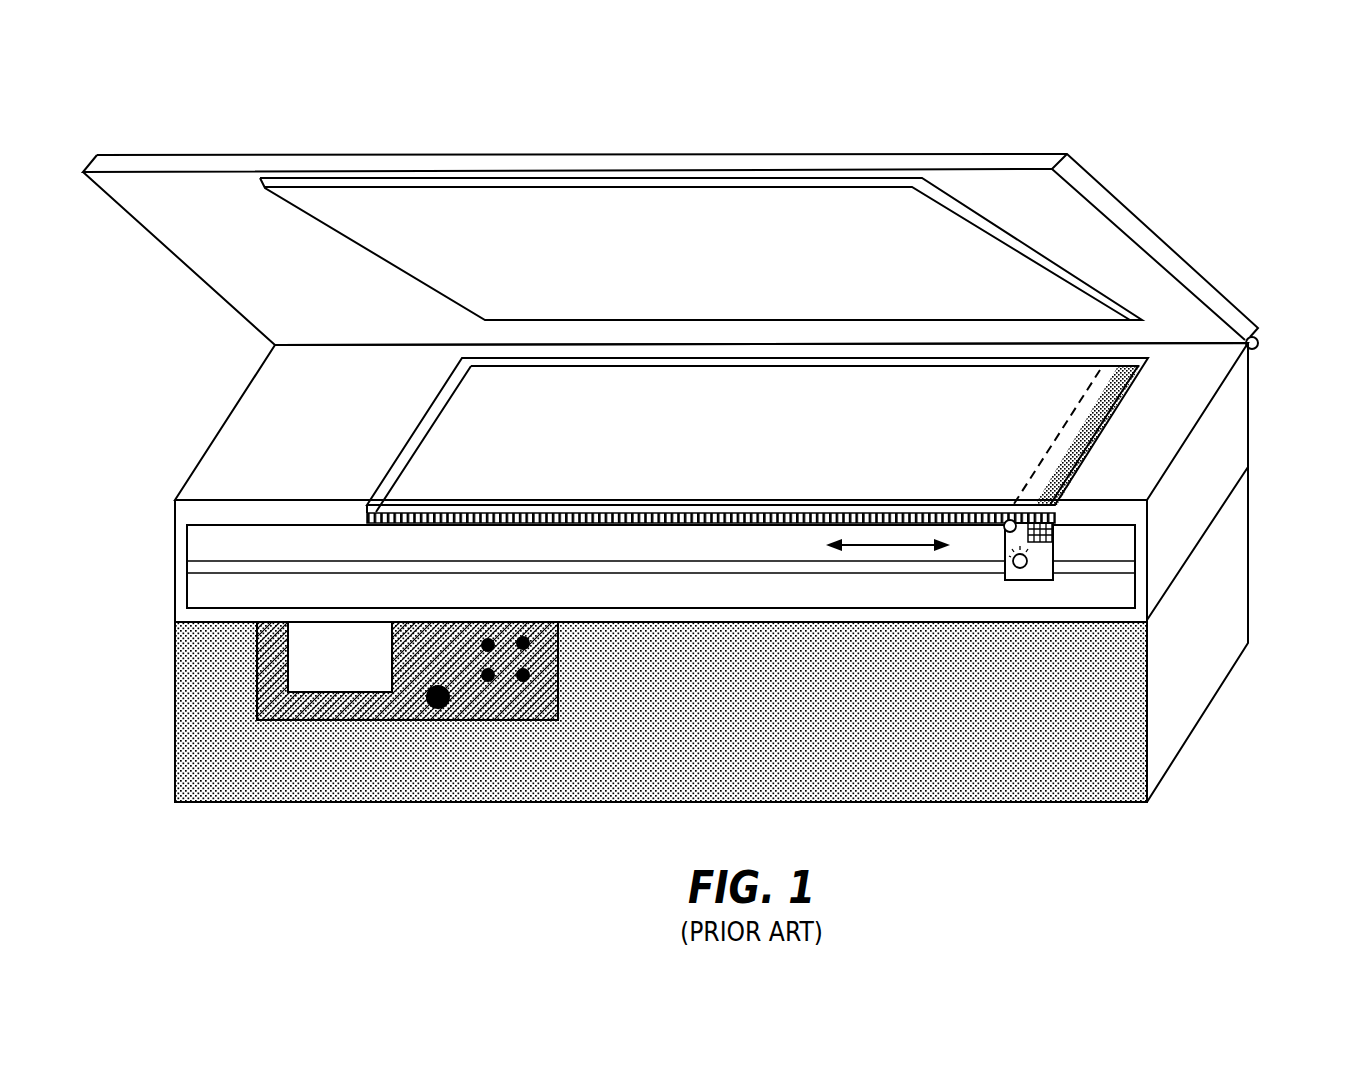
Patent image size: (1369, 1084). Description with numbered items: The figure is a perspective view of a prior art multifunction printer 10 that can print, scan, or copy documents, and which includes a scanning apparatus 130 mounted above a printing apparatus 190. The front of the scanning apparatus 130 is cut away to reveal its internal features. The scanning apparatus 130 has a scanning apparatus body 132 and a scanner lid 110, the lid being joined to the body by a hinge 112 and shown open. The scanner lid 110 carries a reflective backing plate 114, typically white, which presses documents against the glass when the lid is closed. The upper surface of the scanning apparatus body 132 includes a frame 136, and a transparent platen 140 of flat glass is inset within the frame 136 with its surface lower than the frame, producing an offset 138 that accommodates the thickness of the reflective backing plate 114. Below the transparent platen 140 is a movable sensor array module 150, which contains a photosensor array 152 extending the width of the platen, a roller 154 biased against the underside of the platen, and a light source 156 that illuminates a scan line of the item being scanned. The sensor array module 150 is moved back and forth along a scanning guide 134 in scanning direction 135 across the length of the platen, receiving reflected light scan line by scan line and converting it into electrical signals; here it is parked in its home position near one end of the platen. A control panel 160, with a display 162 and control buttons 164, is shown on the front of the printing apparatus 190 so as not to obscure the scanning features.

The multifunction printer 10 is at (282, 86).
The scanner lid 110 is at (208, 263).
The hinge 112 is at (1259, 343).
The reflective backing plate 114 is at (378, 243).
The scanning apparatus 130 is at (164, 500).
The scanning apparatus body 132 is at (174, 533).
The scanning guide 134 is at (202, 570).
The scanning direction 135 is at (877, 548).
The frame 136 is at (233, 457).
The offset 138 is at (446, 383).
The transparent platen 140 is at (433, 447).
The sensor array module 150 is at (1015, 581).
The photosensor array 152 is at (1045, 549).
The roller 154 is at (1008, 519).
The light source 156 is at (1022, 569).
The control panel 160 is at (268, 703).
The display 162 is at (358, 671).
The control buttons 164 is at (510, 690).
The printing apparatus 190 is at (175, 775).